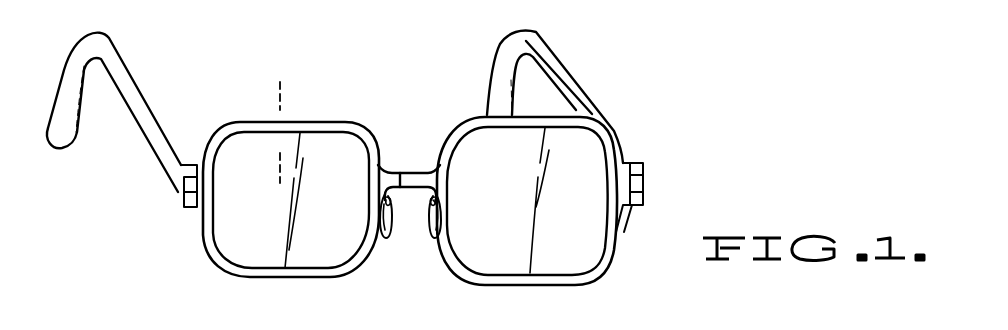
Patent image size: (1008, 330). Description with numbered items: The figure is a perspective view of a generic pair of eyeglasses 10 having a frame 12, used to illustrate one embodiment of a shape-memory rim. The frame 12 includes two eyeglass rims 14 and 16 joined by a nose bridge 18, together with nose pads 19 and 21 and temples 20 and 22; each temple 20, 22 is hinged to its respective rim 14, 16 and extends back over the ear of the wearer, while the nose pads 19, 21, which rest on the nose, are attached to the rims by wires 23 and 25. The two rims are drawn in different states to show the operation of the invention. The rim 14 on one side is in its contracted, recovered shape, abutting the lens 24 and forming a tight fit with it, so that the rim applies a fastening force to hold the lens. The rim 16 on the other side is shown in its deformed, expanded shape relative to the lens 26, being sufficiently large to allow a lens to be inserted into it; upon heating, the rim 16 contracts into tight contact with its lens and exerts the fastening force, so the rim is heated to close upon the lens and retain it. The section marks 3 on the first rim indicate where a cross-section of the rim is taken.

The eyeglasses 10 is at (678, 144).
The frame 12 is at (618, 127).
The eyeglass rim 14 is at (322, 122).
The eyeglass rim 16 is at (549, 114).
The nose bridge 18 is at (416, 170).
The nose pad 19 is at (383, 240).
The temple 20 is at (121, 64).
The nose pad 21 is at (435, 238).
The temple 22 is at (533, 33).
The wire 23 is at (403, 172).
The lens 24 is at (247, 262).
The wire 25 is at (439, 213).
The lens 26 is at (545, 262).
The section line 3- 3 is at (280, 82).